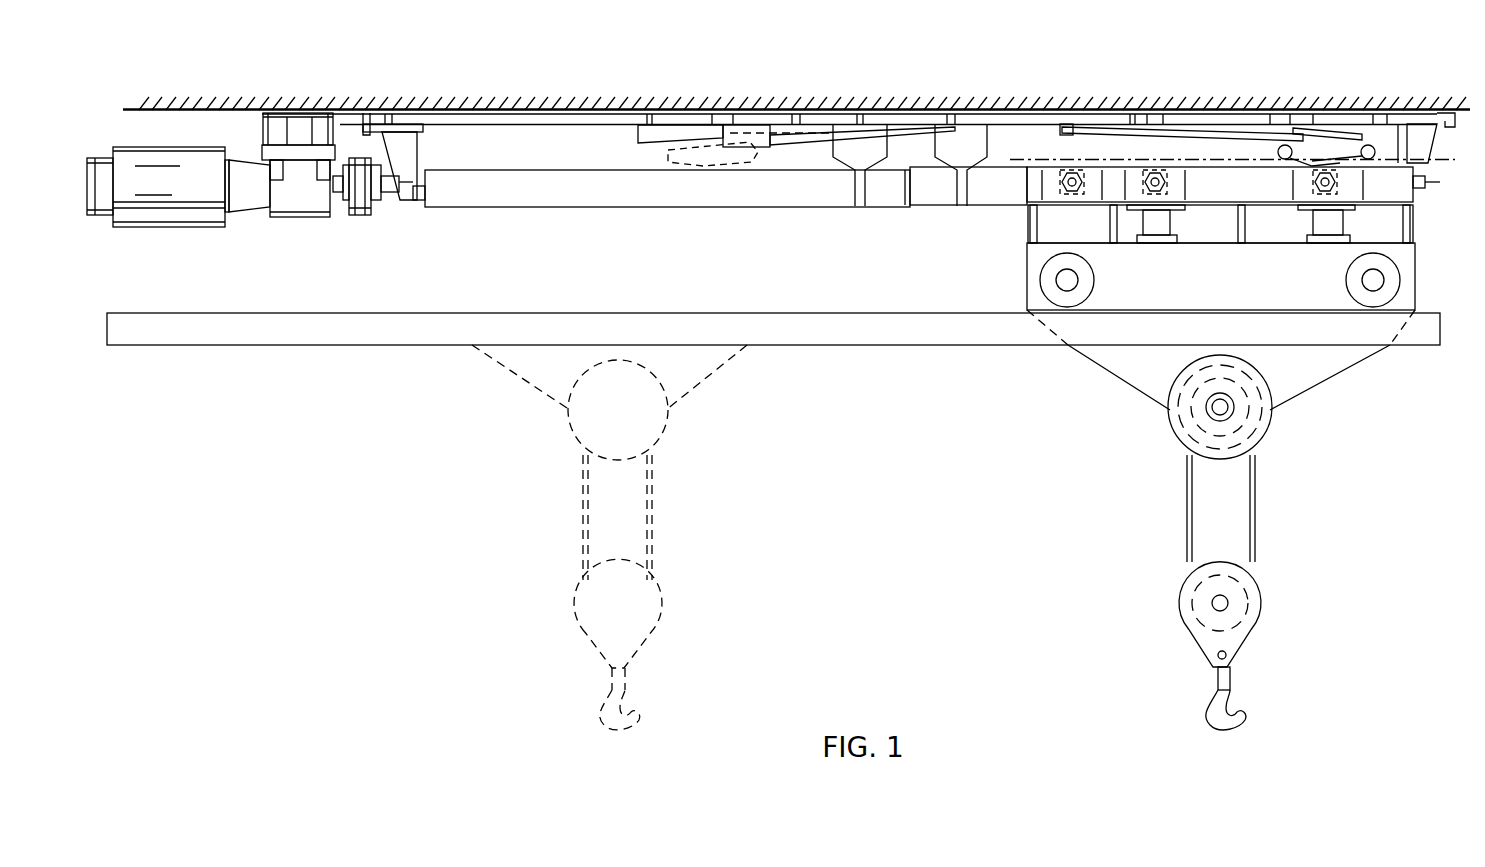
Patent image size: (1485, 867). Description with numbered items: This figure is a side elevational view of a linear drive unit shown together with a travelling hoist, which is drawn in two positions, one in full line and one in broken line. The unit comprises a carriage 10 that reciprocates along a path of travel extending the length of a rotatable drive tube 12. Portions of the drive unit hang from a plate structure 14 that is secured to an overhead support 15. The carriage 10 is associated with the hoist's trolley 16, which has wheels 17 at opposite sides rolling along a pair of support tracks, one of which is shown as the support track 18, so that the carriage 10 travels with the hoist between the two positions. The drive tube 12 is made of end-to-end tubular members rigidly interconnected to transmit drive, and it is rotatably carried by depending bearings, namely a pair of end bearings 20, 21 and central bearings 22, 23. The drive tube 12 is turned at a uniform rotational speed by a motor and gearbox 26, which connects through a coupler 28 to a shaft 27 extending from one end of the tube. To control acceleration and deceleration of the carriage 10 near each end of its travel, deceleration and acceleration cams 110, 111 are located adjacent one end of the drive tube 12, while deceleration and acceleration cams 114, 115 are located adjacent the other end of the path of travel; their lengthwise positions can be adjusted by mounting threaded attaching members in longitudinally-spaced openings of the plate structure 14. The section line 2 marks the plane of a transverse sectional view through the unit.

The section line 2- 2 is at (1012, 186).
The carriage 10 is at (1004, 225).
The rotatable drive tube 12 is at (842, 213).
The plate structure 14 is at (1041, 105).
The overhead support 15 is at (587, 118).
The trolley 16 is at (699, 368).
The wheels 17 is at (1090, 280).
The support track 18 is at (887, 345).
The end bearing 20 is at (402, 140).
The end bearing 21 is at (1412, 130).
The central bearing 22 is at (861, 148).
The central bearing 23 is at (967, 138).
The motor and gearbox 26 is at (243, 240).
The shaft 27 is at (412, 200).
The coupler 28 is at (352, 216).
The deceleration cam 110 is at (1243, 145).
The acceleration cam 111 is at (1340, 132).
The deceleration cam 114 is at (765, 138).
The acceleration cam 115 is at (690, 128).